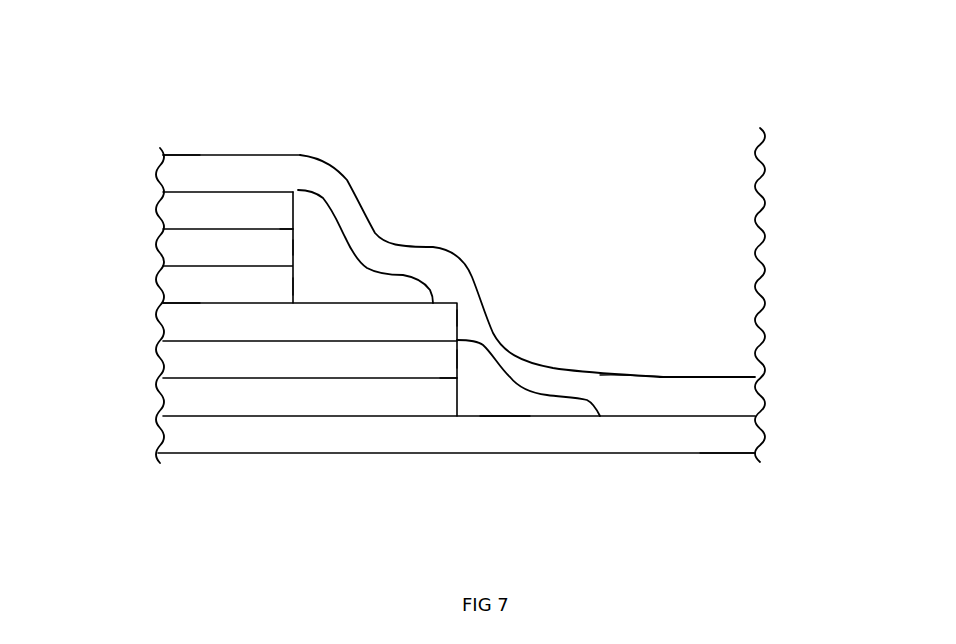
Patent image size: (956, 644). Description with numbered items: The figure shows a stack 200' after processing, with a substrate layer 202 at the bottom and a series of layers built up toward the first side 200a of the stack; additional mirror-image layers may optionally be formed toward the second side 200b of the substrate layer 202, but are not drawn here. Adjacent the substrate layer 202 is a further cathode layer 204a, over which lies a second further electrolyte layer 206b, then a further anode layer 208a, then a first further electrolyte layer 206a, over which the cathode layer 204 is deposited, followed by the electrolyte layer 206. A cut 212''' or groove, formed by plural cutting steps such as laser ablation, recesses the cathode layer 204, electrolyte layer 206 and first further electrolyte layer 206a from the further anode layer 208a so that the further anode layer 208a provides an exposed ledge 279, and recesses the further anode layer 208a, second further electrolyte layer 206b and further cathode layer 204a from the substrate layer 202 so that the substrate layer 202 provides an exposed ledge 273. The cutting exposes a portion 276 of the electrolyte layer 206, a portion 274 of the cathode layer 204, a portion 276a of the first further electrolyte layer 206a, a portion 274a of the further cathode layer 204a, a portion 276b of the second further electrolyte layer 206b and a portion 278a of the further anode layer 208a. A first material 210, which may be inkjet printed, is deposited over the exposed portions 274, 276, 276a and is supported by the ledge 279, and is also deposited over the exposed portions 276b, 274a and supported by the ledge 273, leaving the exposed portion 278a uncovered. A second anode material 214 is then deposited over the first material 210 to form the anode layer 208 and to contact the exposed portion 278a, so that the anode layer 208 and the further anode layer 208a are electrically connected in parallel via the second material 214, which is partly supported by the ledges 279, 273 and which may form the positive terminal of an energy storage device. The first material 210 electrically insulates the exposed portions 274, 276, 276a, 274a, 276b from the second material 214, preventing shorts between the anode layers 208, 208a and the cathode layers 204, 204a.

The stack 200' is at (122, 108).
The first side of the stack 200a is at (286, 155).
The second side of the stack 200b is at (738, 453).
The substrate layer 202 is at (156, 439).
The cathode layer 204 is at (160, 242).
The further cathode layer 204a is at (160, 396).
The electrolyte layer 206 is at (160, 204).
The first further electrolyte layer 206a is at (160, 284).
The second further electrolyte layer 206b is at (160, 357).
The anode layer 208 is at (160, 166).
The further anode layer 208a is at (160, 322).
The first material 210 is at (318, 228).
The cut 212''' is at (776, 275).
The second material 214 is at (600, 390).
The ledge of the substrate layer 273 is at (502, 416).
The exposed portion of the cathode layer 274 is at (293, 247).
The exposed portion of the further cathode layer 274a is at (457, 378).
The exposed portion of the electrolyte layer 276 is at (293, 230).
The exposed portion of the first further electrolyte layer 276a is at (293, 286).
The exposed portion of the second further electrolyte layer 276b is at (457, 359).
The exposed portion of the further anode layer 278a is at (455, 318).
The ledge of the further anode layer 279 is at (322, 328).